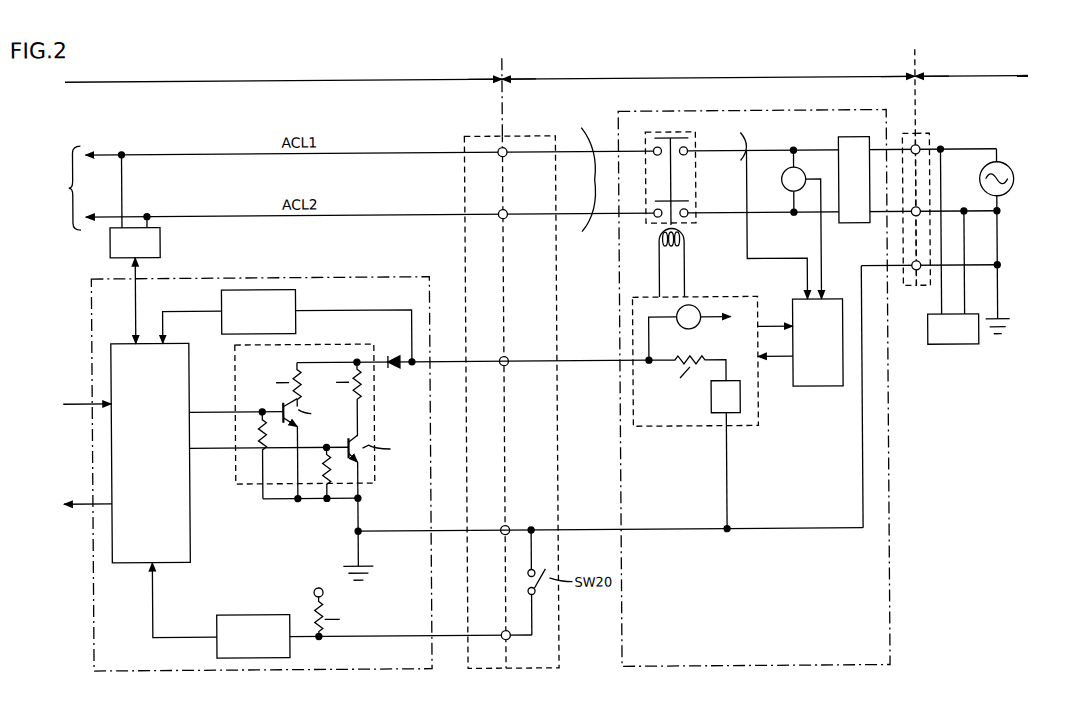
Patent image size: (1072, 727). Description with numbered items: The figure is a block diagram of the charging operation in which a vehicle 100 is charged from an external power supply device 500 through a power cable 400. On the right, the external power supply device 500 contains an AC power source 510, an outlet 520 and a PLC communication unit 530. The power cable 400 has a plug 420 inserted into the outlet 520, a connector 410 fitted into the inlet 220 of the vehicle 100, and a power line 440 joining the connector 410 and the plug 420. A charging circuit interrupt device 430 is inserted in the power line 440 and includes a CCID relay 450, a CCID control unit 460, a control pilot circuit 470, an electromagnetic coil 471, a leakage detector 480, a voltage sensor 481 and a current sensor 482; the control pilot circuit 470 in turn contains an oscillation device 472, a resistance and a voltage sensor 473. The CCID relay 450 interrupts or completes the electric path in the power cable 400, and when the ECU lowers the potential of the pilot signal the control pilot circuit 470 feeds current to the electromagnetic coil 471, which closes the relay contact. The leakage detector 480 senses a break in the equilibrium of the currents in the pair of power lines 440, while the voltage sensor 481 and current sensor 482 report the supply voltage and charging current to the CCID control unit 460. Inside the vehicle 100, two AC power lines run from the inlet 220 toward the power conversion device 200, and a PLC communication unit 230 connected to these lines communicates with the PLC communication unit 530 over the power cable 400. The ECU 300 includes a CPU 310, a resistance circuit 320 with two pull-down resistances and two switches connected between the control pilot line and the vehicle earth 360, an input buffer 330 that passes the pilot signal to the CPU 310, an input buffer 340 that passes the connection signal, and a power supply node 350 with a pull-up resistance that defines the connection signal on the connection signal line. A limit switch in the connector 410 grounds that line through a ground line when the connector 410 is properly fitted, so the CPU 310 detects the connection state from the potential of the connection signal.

The vehicle 100 is at (548, 363).
The power conversion device 200 is at (332, 186).
The inlet 220 is at (485, 134).
The PLC communication unit 230 is at (161, 240).
The ECU 300 is at (395, 278).
The CPU 310 is at (172, 562).
The resistance circuit 320 is at (323, 343).
The input buffer 330 is at (252, 288).
The input buffer 340 is at (256, 613).
The power supply node 350 is at (317, 586).
The vehicle earth 360 is at (370, 565).
The power cable 400 is at (784, 92).
The connector 410 is at (518, 134).
The plug 420 is at (908, 134).
The charging circuit interrupt device (CCID) 430 is at (820, 112).
The power line 440 is at (584, 128).
The CCID relay 450 is at (680, 133).
The CCID control unit 460 is at (818, 388).
The control pilot circuit 470 is at (710, 298).
The electromagnetic coil 471 is at (690, 252).
The oscillation device 472 is at (711, 405).
The voltage sensor 473 is at (697, 328).
The leakage detector 480 is at (855, 226).
The voltage sensor 481 is at (788, 192).
The current sensor 482 is at (752, 135).
The external power supply device 500 is at (996, 181).
The AC power source 510 is at (1008, 166).
The outlet 520 is at (922, 134).
The PLC communication unit 530 is at (951, 347).